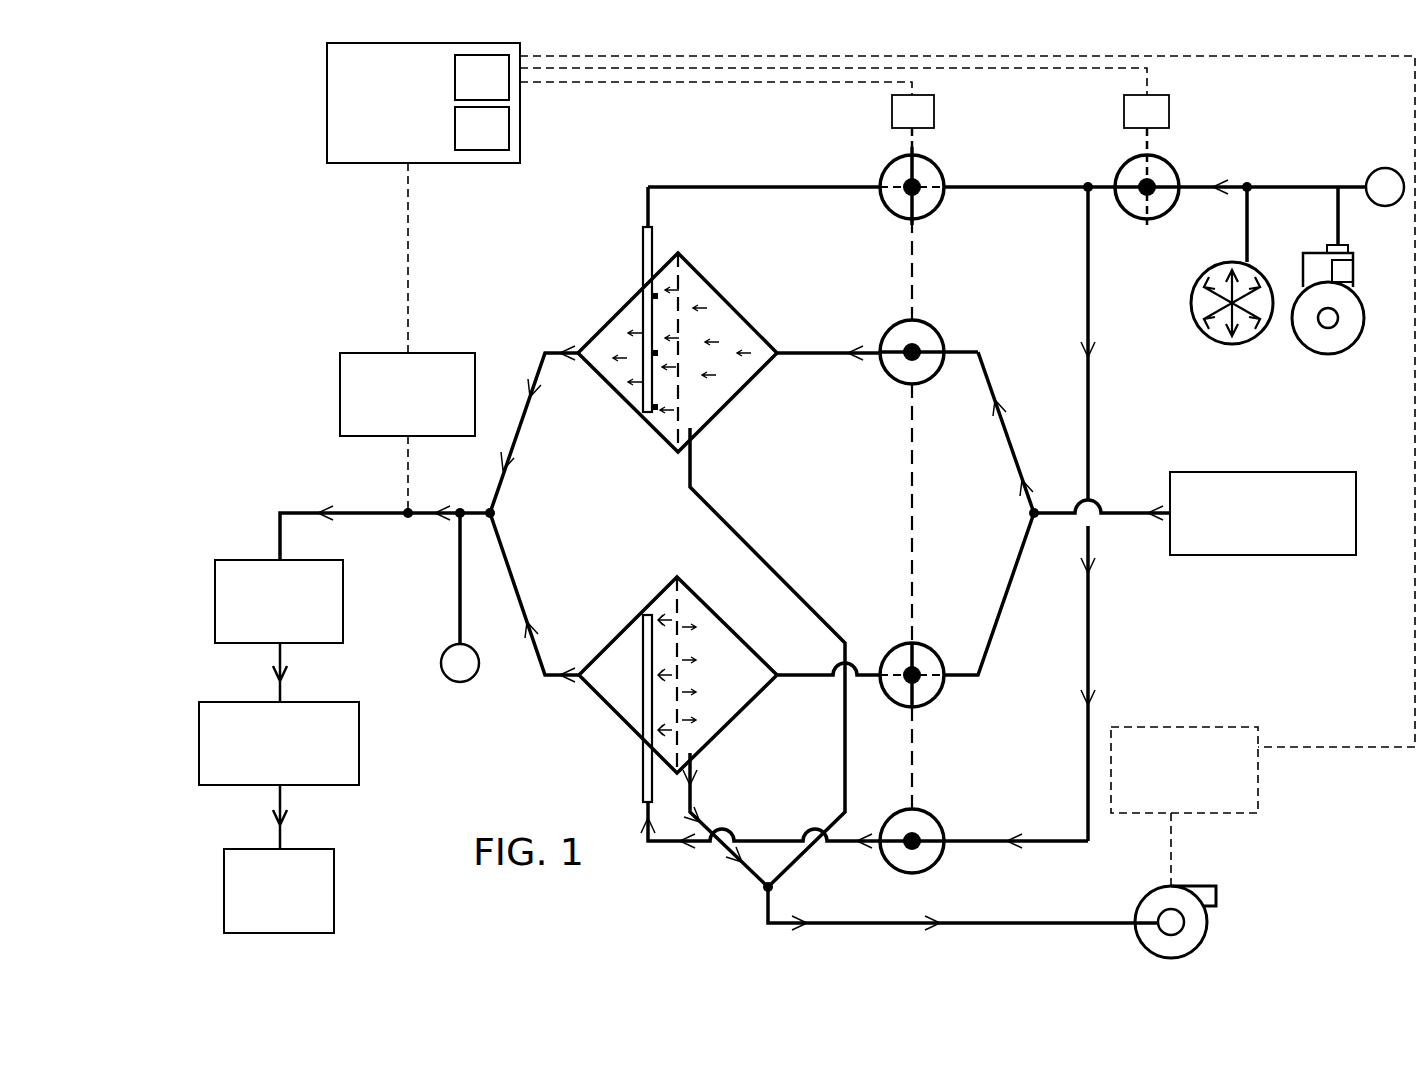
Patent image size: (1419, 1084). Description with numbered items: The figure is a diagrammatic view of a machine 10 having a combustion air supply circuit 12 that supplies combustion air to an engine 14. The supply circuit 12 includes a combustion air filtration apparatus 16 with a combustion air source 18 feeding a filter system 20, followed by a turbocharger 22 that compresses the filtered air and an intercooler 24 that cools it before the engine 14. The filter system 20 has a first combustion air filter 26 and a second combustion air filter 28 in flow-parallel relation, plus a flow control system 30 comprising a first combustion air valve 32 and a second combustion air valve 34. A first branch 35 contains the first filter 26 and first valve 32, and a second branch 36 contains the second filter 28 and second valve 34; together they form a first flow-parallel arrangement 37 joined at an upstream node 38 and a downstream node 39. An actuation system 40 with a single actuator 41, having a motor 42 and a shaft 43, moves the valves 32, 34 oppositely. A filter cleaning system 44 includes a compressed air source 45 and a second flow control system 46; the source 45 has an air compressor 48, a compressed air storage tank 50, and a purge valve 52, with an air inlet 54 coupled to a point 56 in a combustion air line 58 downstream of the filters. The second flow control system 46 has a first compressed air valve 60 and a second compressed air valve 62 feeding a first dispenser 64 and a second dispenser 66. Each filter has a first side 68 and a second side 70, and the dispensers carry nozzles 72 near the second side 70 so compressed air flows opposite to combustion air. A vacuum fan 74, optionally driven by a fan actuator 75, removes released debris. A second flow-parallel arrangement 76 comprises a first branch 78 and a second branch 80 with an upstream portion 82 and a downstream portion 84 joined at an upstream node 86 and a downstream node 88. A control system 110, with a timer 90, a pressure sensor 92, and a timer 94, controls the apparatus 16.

The machine 10 is at (189, 77).
The combustion air supply circuit 12 is at (1264, 432).
The engine 14 is at (224, 878).
The combustion air filtration apparatus 16 is at (597, 286).
The combustion air source 18 is at (1255, 555).
The filter system 20 is at (604, 608).
The turbocharger 22 is at (215, 592).
The intercooler 24 is at (199, 724).
The first combustion air filter 26 is at (703, 399).
The second combustion air filter 28 is at (703, 721).
The flow control system 30 is at (955, 287).
The first combustion air valve 32 is at (932, 385).
The second combustion air valve 34 is at (930, 645).
The first branch 35 is at (848, 358).
The second branch 36 is at (798, 680).
The first flow-parallel arrangement 37 is at (1050, 385).
The upstream node 38 is at (1040, 505).
The downstream node 39 is at (495, 513).
The actuation system 40 is at (719, 111).
The actuator 41 is at (676, 120).
The motor 42 is at (892, 112).
The shaft 43 is at (885, 143).
The filter cleaning system 44 is at (1111, 671).
The compressed air source 45 is at (1367, 134).
The second flow control system 46 is at (881, 884).
The air compressor 48 is at (1305, 350).
The compressed air storage tank 50 is at (1232, 344).
The purge valve 52 is at (1140, 220).
The air inlet 54 is at (1340, 270).
The point 56 is at (460, 508).
The combustion air line 58 is at (368, 517).
The first compressed air valve 60 is at (890, 212).
The second compressed air valve 62 is at (945, 815).
The first dispenser 64 is at (640, 318).
The second dispenser 66 is at (642, 637).
The first side 68 is at (680, 290).
The second side 70 is at (663, 292).
The nozzles 72 is at (652, 420).
The vacuum fan 74 is at (1205, 886).
The fan actuator 75 is at (1280, 745).
The second flow-parallel arrangement 76 is at (1050, 870).
The first branch 78 is at (685, 189).
The second branch 80 is at (763, 838).
The upstream portion 82 is at (1114, 399).
The downstream portion 84 is at (712, 871).
The upstream node 86 is at (1085, 190).
The downstream node 88 is at (766, 889).
The timer 90 is at (469, 144).
The pressure sensor 92 is at (368, 353).
The timer 94 is at (469, 92).
The control system 110 is at (327, 137).